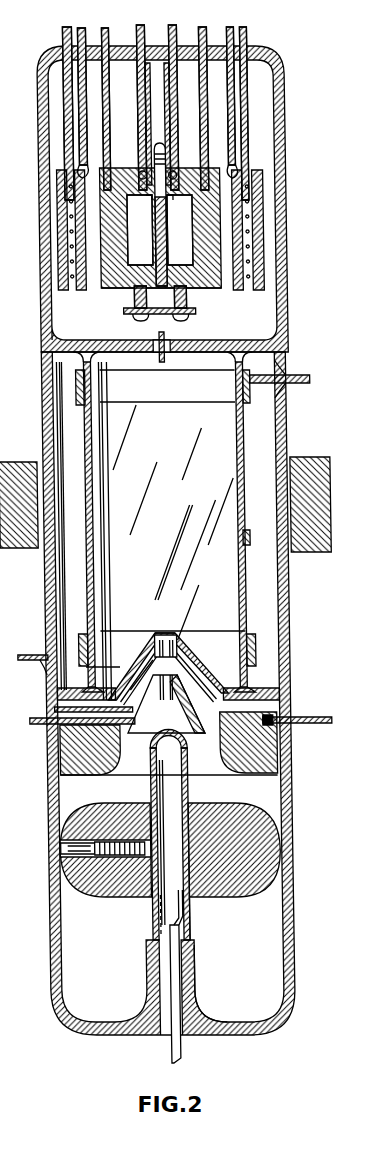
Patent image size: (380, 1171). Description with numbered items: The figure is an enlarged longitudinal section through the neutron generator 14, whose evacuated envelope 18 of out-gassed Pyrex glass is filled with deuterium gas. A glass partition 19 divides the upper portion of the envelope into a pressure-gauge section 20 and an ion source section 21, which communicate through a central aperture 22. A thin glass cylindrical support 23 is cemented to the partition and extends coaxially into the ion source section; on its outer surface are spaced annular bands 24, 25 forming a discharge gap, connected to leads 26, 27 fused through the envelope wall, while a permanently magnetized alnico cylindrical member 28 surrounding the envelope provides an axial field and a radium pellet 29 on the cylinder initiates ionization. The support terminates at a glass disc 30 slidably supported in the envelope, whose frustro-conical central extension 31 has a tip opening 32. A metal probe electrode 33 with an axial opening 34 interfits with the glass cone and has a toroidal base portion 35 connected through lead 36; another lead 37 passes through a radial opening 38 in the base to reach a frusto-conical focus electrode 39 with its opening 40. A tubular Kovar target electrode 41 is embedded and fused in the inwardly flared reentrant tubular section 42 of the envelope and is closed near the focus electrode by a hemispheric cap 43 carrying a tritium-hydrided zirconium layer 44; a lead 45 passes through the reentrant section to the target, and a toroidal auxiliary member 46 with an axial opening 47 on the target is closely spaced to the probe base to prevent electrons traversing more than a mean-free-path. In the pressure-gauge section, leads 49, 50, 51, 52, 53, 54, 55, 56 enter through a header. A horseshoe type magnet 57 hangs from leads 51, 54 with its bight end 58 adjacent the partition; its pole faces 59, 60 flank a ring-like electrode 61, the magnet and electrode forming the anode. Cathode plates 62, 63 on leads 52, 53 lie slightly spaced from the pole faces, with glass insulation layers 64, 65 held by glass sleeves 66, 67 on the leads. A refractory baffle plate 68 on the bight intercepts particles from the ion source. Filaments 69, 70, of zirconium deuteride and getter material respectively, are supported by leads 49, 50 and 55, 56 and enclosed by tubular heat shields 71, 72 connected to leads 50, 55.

The neutron generator 14 is at (291, 615).
The evacuated envelope 18 is at (279, 791).
The partition 19 is at (135, 341).
The pressure-gauge section 20 is at (248, 329).
The ion source section 21 is at (59, 427).
The central aperture 22 is at (152, 355).
The cylindrical support 23 is at (77, 449).
The annular band 24 is at (67, 640).
The annular band 25 is at (244, 390).
The lead 26 is at (22, 662).
The lead 27 is at (292, 380).
The cylindrical member of magnetic material 28 is at (311, 457).
The pellet of radioactive material 29 is at (239, 530).
The glass disc 30 is at (274, 668).
The central extension 31 is at (140, 640).
The opening 32 is at (164, 633).
The probe electrode 33 is at (195, 674).
The opening 34 is at (152, 632).
The base portion 35 is at (261, 752).
The lead 36 is at (287, 719).
The lead 37 is at (27, 723).
The radial opening 38 is at (53, 760).
The focus electrode 39 is at (144, 692).
The opening 40 is at (137, 656).
The target electrode 41 is at (136, 918).
The reentrant tubular section 42 is at (182, 990).
The hemispheric cap 43 is at (159, 752).
The layer of zirconium 44 is at (132, 746).
The lead 45 is at (167, 1040).
The auxiliary member 46 is at (253, 830).
The axial opening 47 is at (183, 895).
The lead 49 is at (64, 31).
The lead 50 is at (81, 32).
The lead 51 is at (105, 32).
The lead 52 is at (142, 29).
The lead 53 is at (174, 45).
The lead 54 is at (205, 29).
The lead 55 is at (231, 29).
The lead 56 is at (246, 42).
The horseshoe type magnet 57 is at (105, 281).
The bight end 58 is at (186, 285).
The pole face 59 is at (128, 210).
The pole face 60 is at (180, 206).
The ring-like electrode 61 is at (158, 142).
The cathode plate 62 is at (138, 171).
The cathode plate 63 is at (172, 171).
The layer of glass insulation 64 is at (144, 196).
The layer of glass insulation 65 is at (165, 196).
The glass sleeve 66 is at (144, 95).
The glass sleeve 67 is at (172, 95).
The baffle plate 68 is at (151, 315).
The filament 69 is at (58, 291).
The filament 70 is at (252, 286).
The heat shield 71 is at (75, 291).
The heat shield 72 is at (232, 286).